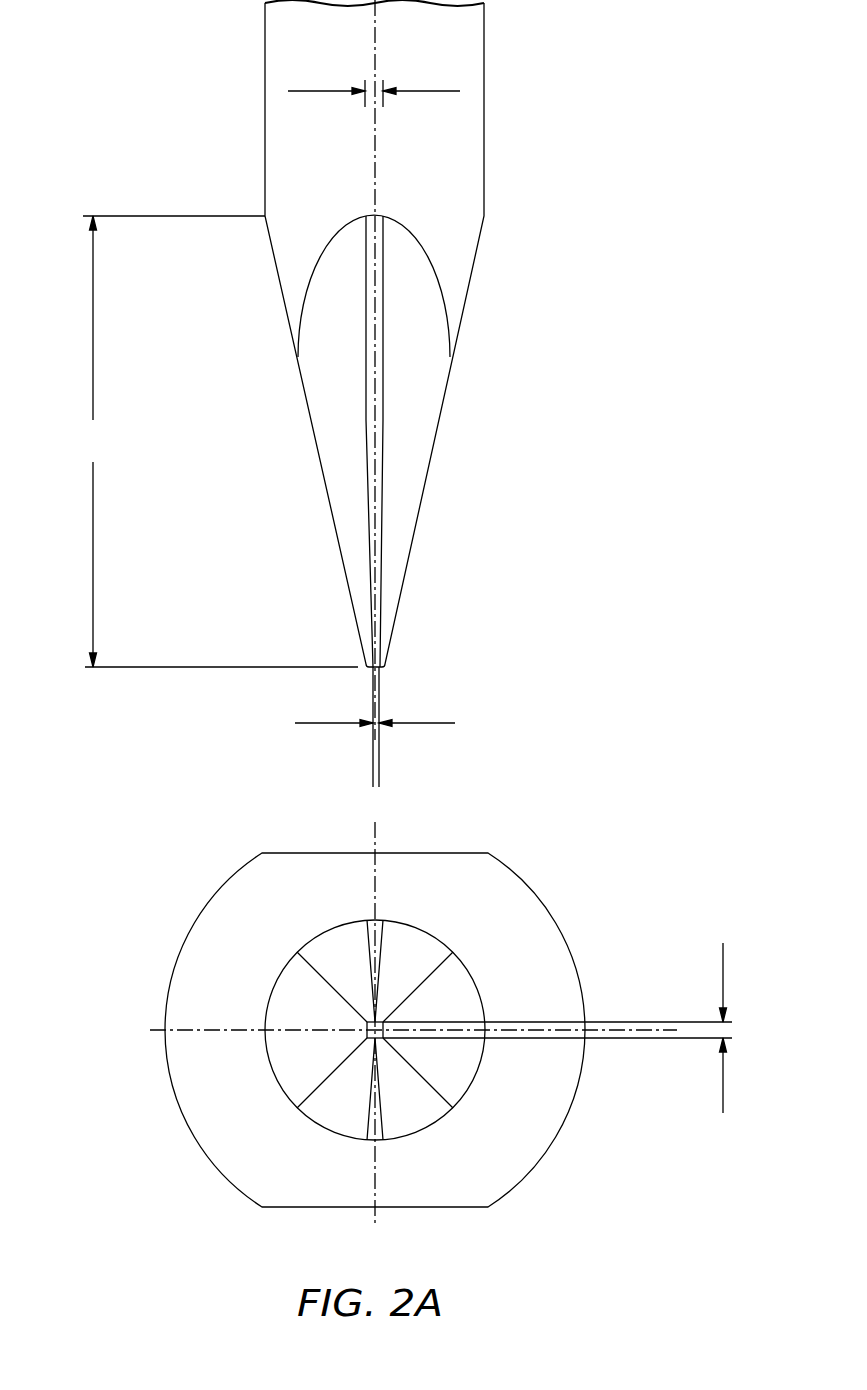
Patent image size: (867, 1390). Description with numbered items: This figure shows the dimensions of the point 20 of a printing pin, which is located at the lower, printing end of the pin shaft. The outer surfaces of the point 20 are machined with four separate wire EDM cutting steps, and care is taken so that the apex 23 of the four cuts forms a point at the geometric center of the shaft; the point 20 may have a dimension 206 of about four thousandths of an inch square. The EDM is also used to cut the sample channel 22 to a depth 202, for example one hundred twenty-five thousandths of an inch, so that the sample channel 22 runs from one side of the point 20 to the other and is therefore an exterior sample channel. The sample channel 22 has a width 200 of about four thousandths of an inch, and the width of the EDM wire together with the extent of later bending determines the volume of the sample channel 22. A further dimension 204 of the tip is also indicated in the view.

The point 20 is at (512, 447).
The sample channel 22 is at (384, 356).
The apex 23 is at (383, 1021).
The width 200 is at (380, 78).
The depth 202 is at (217, 441).
The tip diameter dimension 204 is at (395, 724).
The dimension 206 is at (728, 1028).